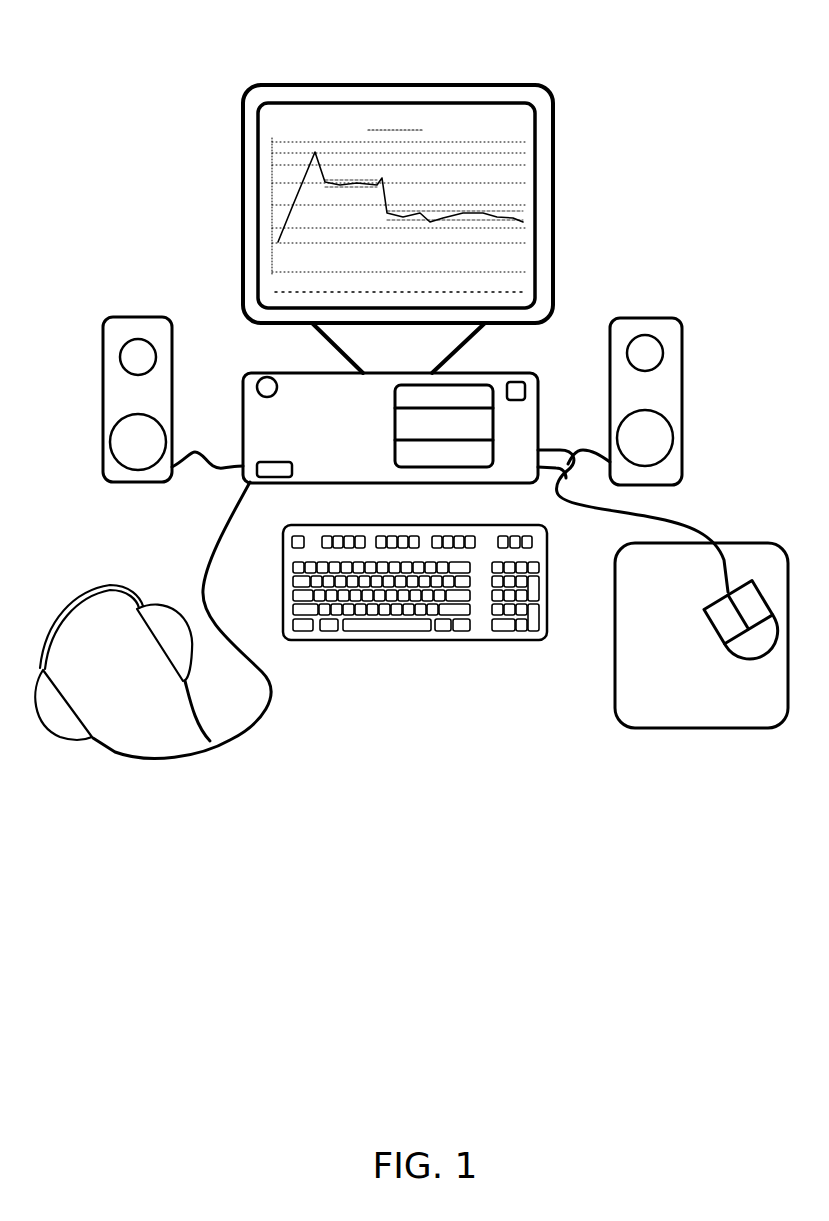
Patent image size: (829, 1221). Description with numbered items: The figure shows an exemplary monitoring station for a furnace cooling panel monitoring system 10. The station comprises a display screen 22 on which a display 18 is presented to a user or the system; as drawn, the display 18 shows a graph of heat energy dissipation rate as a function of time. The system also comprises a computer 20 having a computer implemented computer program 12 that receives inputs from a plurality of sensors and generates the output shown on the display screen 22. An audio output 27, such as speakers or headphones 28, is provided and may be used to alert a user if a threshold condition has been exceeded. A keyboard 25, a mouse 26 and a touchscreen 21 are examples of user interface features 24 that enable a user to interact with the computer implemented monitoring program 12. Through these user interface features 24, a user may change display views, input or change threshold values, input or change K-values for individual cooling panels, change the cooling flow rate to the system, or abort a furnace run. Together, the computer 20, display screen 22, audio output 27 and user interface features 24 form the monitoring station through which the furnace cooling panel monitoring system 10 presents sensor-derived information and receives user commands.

The furnace cooling panel monitoring system 10 is at (590, 178).
The computer implemented computer program 12 is at (533, 373).
The display 18 is at (258, 130).
The computer 20 is at (243, 377).
The touchscreen 21 is at (465, 135).
The display screen 22 is at (258, 240).
The user interface features 24 is at (458, 628).
The keyboard 25 is at (512, 628).
The mouse 26 is at (753, 647).
The audio output 27 is at (663, 348).
The headphones 28 is at (72, 617).